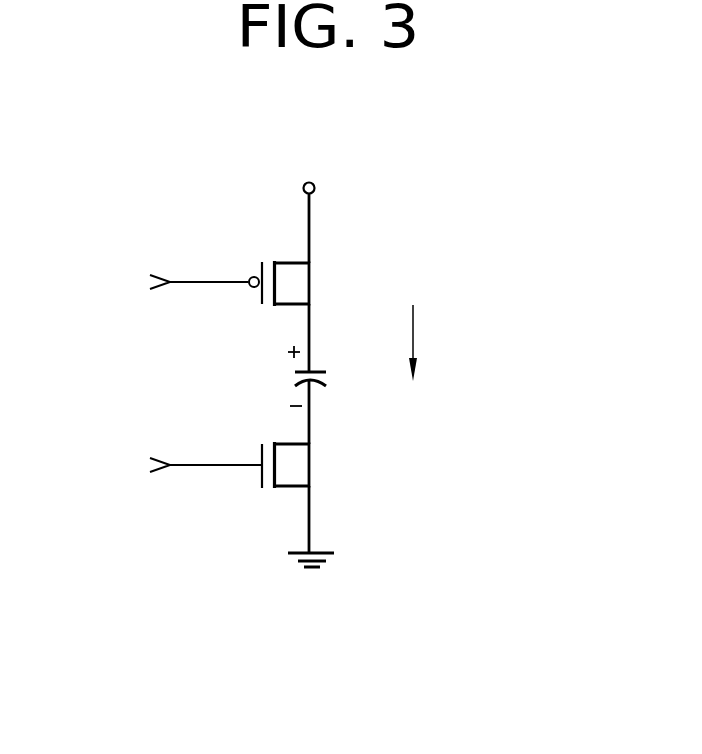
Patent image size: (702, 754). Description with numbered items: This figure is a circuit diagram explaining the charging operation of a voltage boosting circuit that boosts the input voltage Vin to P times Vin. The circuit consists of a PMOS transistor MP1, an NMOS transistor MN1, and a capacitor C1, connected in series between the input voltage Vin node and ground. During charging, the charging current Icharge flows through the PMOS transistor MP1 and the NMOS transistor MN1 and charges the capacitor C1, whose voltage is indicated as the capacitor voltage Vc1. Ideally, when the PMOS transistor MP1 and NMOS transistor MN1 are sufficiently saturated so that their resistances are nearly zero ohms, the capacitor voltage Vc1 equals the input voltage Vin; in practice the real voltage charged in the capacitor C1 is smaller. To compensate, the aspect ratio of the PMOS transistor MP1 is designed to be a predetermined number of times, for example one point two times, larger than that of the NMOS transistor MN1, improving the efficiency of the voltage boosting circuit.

The input voltage Vin is at (311, 204).
The PMOS transistor MP1 is at (235, 316).
The NMOS transistor MN1 is at (235, 504).
The capacitor C1 is at (334, 402).
The capacitor voltage Vc1 is at (275, 376).
The charging current Icharge is at (456, 343).